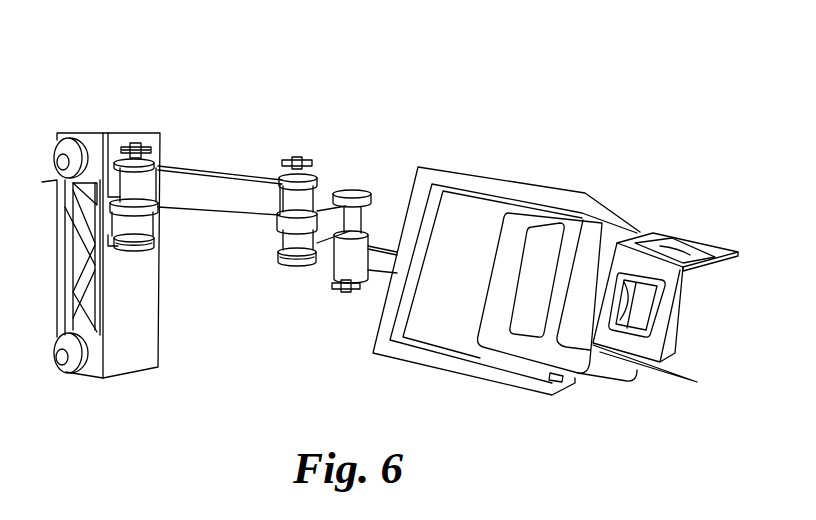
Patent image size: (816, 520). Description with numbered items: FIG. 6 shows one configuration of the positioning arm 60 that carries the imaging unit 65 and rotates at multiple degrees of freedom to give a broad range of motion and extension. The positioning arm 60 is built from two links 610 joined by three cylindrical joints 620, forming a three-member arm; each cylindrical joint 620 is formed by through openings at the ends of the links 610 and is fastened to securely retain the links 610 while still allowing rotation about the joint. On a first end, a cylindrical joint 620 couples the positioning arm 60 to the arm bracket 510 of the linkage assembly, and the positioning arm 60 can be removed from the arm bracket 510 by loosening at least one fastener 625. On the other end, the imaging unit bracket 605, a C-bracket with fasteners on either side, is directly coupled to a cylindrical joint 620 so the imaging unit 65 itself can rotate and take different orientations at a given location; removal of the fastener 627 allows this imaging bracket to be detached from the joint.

The positioning arm 60 is at (388, 214).
The imaging unit 65 is at (648, 233).
The arm bracket 510 is at (132, 358).
The imaging unit bracket 605 is at (478, 152).
The links 610 is at (232, 202).
The cylindrical joints 620 is at (132, 180).
The fastener 625 is at (122, 148).
The fastener 627 is at (343, 293).